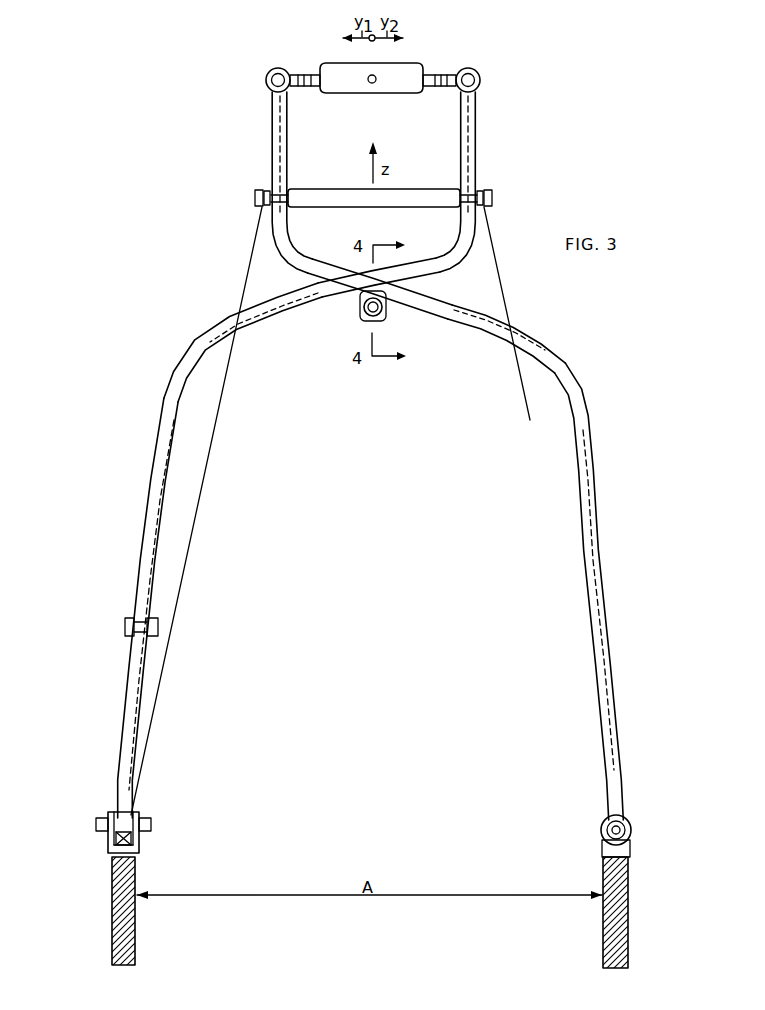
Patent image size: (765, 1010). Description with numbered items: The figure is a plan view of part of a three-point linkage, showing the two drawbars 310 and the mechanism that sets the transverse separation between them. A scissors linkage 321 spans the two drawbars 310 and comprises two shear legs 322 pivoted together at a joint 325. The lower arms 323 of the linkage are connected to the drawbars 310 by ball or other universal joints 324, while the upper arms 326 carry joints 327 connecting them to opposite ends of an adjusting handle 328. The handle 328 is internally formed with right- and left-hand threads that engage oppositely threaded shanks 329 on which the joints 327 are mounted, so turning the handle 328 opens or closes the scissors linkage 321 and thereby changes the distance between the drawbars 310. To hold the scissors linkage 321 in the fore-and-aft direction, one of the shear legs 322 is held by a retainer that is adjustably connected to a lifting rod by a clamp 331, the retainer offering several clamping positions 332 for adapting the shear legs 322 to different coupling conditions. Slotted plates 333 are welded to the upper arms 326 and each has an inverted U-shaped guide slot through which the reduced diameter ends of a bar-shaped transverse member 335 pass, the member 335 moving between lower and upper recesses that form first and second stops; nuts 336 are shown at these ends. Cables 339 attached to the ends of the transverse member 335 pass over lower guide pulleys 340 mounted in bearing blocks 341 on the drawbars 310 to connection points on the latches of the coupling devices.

The drawbar 310 is at (121, 918).
The scissors linkage 321 is at (309, 313).
The shear leg 322 is at (271, 316).
The lower arm 323 is at (127, 729).
The universal joint 324 is at (632, 830).
The joint 325 is at (384, 318).
The upper arm 326 is at (272, 107).
The joint 327 is at (266, 79).
The adjusting handle 328 is at (347, 84).
The threaded shank 329 is at (308, 88).
The clamp 331 is at (132, 616).
The clamping position 332 is at (122, 626).
The slotted plate 333 is at (272, 154).
The transverse member 335 is at (338, 191).
The nut 336 is at (279, 193).
The cable 339 is at (250, 261).
The lower guide pulley 340 is at (133, 836).
The bearing block 341 is at (108, 841).